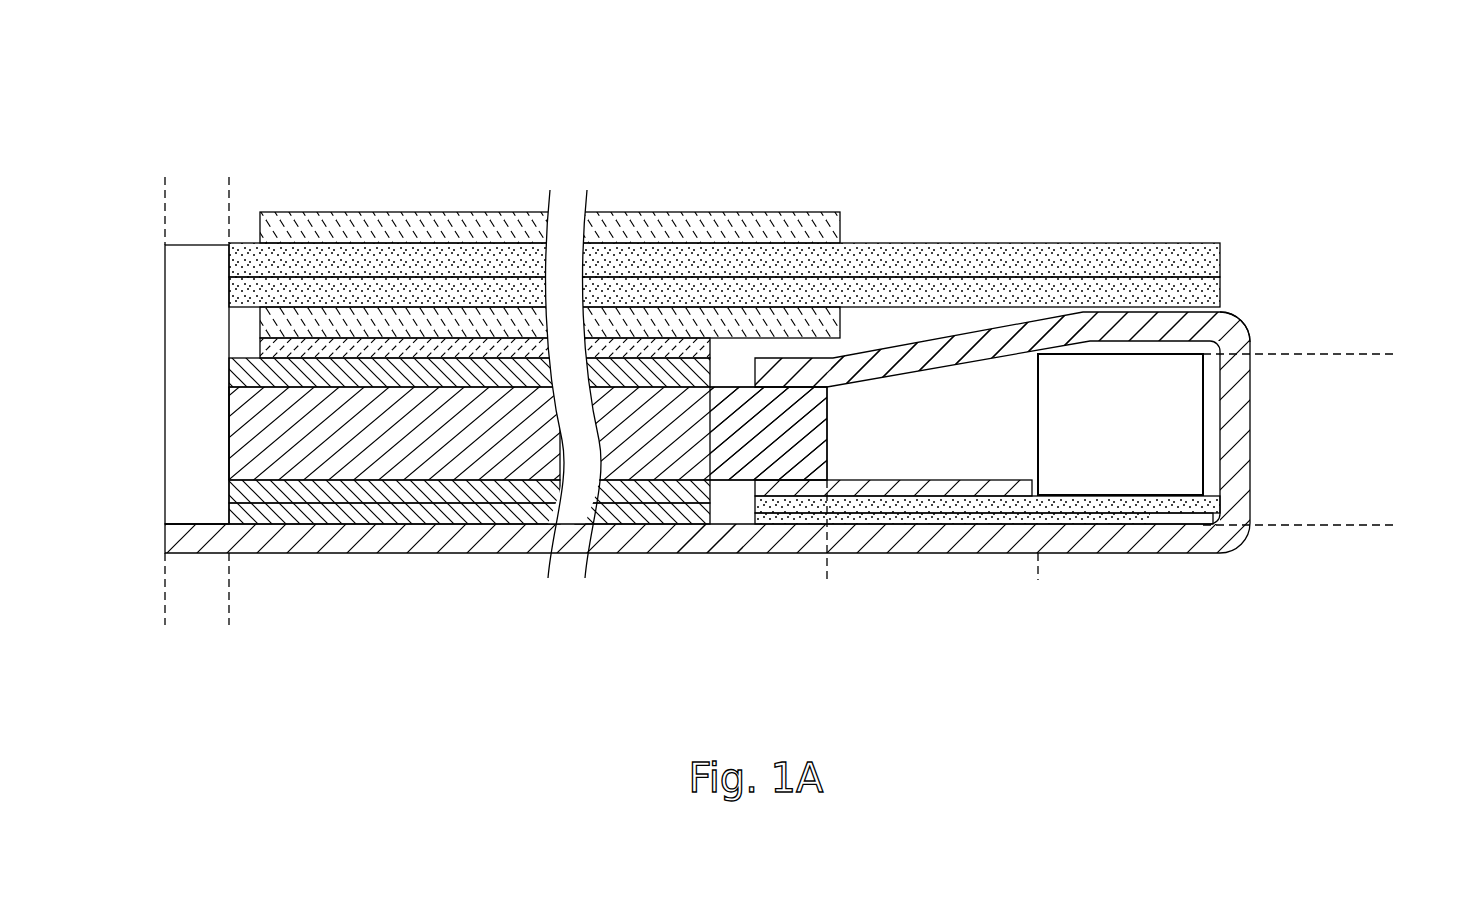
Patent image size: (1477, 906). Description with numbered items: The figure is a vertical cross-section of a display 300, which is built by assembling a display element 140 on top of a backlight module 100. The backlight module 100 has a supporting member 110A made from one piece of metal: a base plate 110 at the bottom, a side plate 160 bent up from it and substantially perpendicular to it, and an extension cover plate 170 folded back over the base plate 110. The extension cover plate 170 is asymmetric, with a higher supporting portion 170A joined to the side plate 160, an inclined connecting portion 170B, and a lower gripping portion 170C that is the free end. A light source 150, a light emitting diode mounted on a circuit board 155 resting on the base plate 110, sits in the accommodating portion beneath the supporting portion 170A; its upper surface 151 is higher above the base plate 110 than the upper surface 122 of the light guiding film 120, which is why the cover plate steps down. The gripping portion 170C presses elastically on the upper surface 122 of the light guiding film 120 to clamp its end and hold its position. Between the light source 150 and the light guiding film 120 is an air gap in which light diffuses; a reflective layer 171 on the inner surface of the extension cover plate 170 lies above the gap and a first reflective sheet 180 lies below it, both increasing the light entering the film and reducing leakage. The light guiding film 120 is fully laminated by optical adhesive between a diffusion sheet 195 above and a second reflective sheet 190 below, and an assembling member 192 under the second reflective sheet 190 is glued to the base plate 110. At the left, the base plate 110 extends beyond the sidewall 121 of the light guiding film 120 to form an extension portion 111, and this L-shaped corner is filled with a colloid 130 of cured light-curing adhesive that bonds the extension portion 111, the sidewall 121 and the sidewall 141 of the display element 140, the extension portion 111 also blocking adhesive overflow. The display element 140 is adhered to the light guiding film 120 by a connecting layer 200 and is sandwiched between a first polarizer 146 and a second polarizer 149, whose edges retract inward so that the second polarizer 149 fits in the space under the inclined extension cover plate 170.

The backlight module 100 is at (1193, 592).
The base plate 110 is at (713, 543).
The supporting member 110A is at (677, 645).
The extension portion 111 is at (193, 523).
The light guiding film 120 is at (642, 452).
The sidewall of the light guiding film 121 is at (230, 447).
The upper surface of the light guiding film 122 is at (770, 385).
The colloid 130 is at (183, 358).
The display element 140 is at (438, 252).
The sidewall of the display element 141 is at (232, 262).
The first polarizer 146 is at (650, 232).
The second polarizer 149 is at (727, 320).
The light source 150 is at (1188, 413).
The upper surface of the light source 151 is at (1195, 336).
The circuit board 155 is at (1207, 500).
The side plate 160 is at (1237, 438).
The extension cover plate 170 is at (782, 137).
The supporting portion 170A is at (1130, 327).
The connecting portion 170B is at (970, 340).
The gripping portion 170C is at (805, 373).
The reflective layer 171 is at (956, 340).
The first reflective sheet 180 is at (775, 485).
The second reflective sheet 190 is at (465, 495).
The assembling member 192 is at (525, 510).
The diffusion sheet 195 is at (625, 375).
The connecting layer 200 is at (482, 347).
The display 300 is at (150, 50).